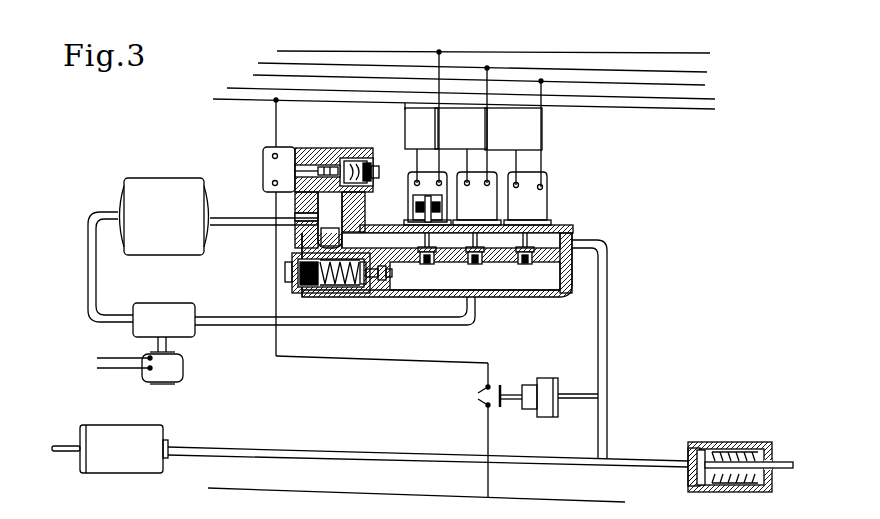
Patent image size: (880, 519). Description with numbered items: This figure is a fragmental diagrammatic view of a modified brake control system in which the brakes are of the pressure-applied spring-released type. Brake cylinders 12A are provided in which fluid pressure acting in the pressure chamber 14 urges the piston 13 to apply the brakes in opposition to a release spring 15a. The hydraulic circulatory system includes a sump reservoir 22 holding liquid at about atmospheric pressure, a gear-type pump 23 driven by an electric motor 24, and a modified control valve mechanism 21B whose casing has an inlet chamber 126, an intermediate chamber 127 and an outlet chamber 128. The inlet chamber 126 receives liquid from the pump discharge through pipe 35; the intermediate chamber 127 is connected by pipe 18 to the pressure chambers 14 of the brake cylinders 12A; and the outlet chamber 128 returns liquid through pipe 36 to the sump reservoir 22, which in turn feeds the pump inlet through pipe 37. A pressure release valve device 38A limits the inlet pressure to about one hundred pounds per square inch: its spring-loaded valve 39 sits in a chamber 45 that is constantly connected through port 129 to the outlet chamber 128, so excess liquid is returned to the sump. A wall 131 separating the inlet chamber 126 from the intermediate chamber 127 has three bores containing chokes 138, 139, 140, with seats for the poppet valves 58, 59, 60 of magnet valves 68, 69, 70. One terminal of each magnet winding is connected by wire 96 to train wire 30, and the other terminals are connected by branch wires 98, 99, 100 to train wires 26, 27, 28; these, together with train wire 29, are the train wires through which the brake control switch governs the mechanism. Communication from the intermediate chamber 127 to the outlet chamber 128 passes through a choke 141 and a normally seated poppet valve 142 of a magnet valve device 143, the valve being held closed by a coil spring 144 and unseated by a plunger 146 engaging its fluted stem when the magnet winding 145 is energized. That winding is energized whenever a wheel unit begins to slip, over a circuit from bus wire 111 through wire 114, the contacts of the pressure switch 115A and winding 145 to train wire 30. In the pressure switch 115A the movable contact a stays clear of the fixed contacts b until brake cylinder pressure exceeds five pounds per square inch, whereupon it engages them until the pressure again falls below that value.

The train wire 26 is at (318, 52).
The train wire 27 is at (370, 66).
The train wire 28 is at (307, 77).
The train wire 29 is at (366, 91).
The train wire 30 is at (313, 103).
The wire 114 is at (273, 121).
The wire 96 is at (404, 119).
The branch wire 98 is at (437, 122).
The branch wire 99 is at (486, 122).
The branch wire 100 is at (541, 122).
The magnet valve 68 is at (424, 176).
The magnet valve 69 is at (471, 176).
The magnet valve 70 is at (523, 176).
The magnet winding 145 is at (284, 153).
The plunger 146 is at (326, 165).
The poppet valve 142 is at (350, 158).
The magnet valve device 143 is at (262, 175).
The port 129 is at (306, 250).
The outlet chamber 128 is at (312, 216).
The coil spring 144 is at (366, 200).
The choke 141 is at (350, 224).
The intermediate chamber 127 is at (552, 242).
The control valve mechanism 21B is at (571, 229).
The wall 131 is at (548, 267).
The inlet chamber 126 is at (552, 298).
The poppet valve 58 is at (420, 244).
The poppet valve 59 is at (474, 245).
The poppet valve 60 is at (522, 245).
The choke 138 is at (428, 272).
The choke 139 is at (477, 272).
The choke 140 is at (527, 272).
The pressure release valve device 38A is at (284, 274).
The chamber 45 is at (338, 293).
The spring-loaded valve 39 is at (375, 293).
The sump reservoir 22 is at (148, 178).
The pipe 36 is at (250, 215).
The pipe 37 is at (87, 254).
The pump 23 is at (157, 303).
The pipe 35 is at (252, 318).
The electric motor 24 is at (186, 368).
The fixed contacts b is at (476, 396).
The movable contact a is at (513, 378).
The pressure switch 115A is at (536, 378).
The pipe 18 is at (609, 363).
The brake cylinder 12A is at (107, 424).
The pressure chamber 14 is at (692, 474).
The piston 13 is at (704, 442).
The release spring 15a is at (760, 443).
The bus wire 111 is at (386, 496).